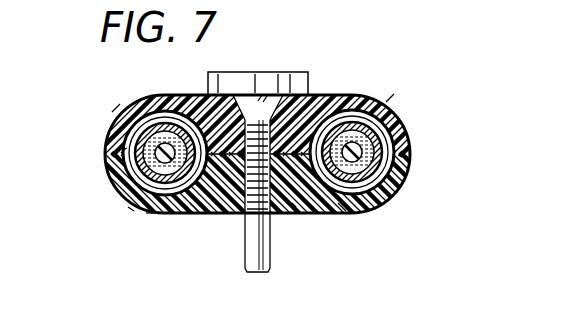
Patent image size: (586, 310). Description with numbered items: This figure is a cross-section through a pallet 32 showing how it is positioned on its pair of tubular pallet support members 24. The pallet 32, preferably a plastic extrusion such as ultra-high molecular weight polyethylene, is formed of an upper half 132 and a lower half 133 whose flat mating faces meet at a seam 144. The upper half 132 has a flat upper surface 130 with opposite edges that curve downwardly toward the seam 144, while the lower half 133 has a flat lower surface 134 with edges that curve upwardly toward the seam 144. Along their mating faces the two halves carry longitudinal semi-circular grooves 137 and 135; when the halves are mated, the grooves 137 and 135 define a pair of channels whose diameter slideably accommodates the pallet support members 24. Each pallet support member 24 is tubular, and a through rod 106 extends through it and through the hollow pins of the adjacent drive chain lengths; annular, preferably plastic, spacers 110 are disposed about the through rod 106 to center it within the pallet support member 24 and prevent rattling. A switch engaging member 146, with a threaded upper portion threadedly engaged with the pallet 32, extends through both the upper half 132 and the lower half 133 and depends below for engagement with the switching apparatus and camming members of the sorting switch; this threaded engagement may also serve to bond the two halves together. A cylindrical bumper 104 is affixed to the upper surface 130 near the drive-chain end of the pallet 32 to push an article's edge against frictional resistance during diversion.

The pallet 32 is at (390, 80).
The pallet support member 24 is at (142, 150).
The cylindrical bumper 104 is at (208, 80).
The through rod 106 is at (149, 143).
The spacer 110 is at (194, 203).
The upper surface 130 is at (218, 96).
The upper half 132 is at (130, 103).
The lower half 133 is at (124, 212).
The lower surface 134 is at (151, 213).
The semi-circular groove 135 is at (140, 185).
The semi-circular groove 137 is at (112, 115).
The seam 144 is at (112, 158).
The switch engaging member 146 is at (250, 224).